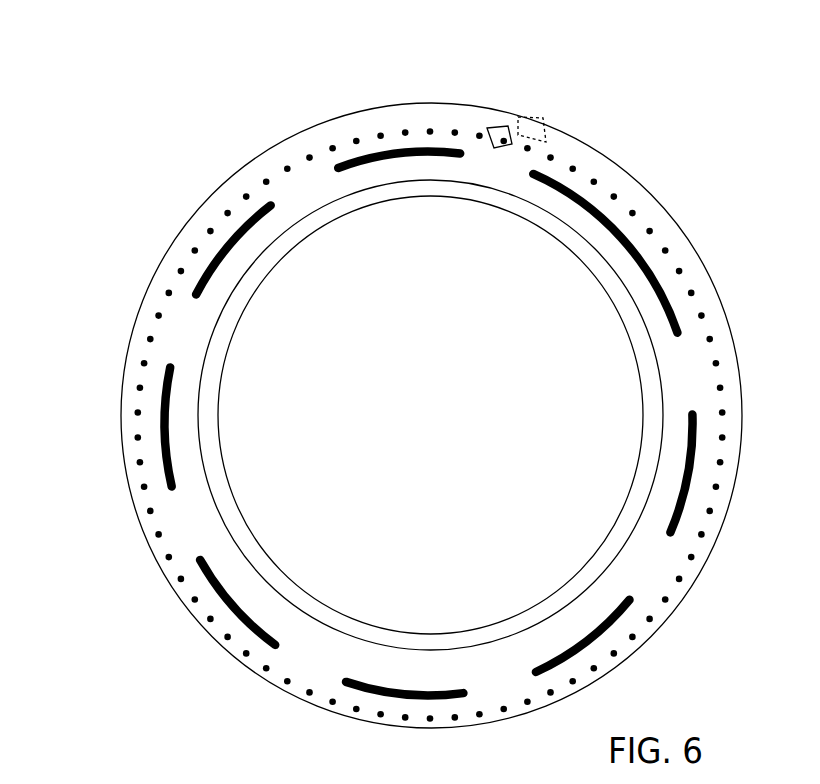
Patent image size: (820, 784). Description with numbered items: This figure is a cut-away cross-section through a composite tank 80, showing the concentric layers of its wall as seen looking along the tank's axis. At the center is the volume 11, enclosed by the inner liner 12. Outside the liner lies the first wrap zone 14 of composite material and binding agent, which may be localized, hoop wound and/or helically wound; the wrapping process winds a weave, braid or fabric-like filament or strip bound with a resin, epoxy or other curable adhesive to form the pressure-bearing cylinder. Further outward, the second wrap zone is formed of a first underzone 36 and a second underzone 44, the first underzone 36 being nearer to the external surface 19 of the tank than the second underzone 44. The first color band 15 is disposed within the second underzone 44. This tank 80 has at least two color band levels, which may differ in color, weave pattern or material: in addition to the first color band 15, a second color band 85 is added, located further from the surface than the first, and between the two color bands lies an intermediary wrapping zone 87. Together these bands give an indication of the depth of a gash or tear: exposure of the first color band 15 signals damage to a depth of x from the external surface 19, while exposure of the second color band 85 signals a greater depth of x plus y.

The composite tank 80 is at (150, 163).
The external surface 19 is at (145, 292).
The first color band 15 is at (667, 245).
The second color band 85 is at (617, 222).
The first wrap zone 14 is at (210, 550).
The intermediary wrapping zone 87 is at (459, 142).
The second underzone 44 is at (498, 128).
The first underzone 36 is at (545, 117).
The volume 11 is at (418, 384).
The inner liner 12 is at (592, 555).